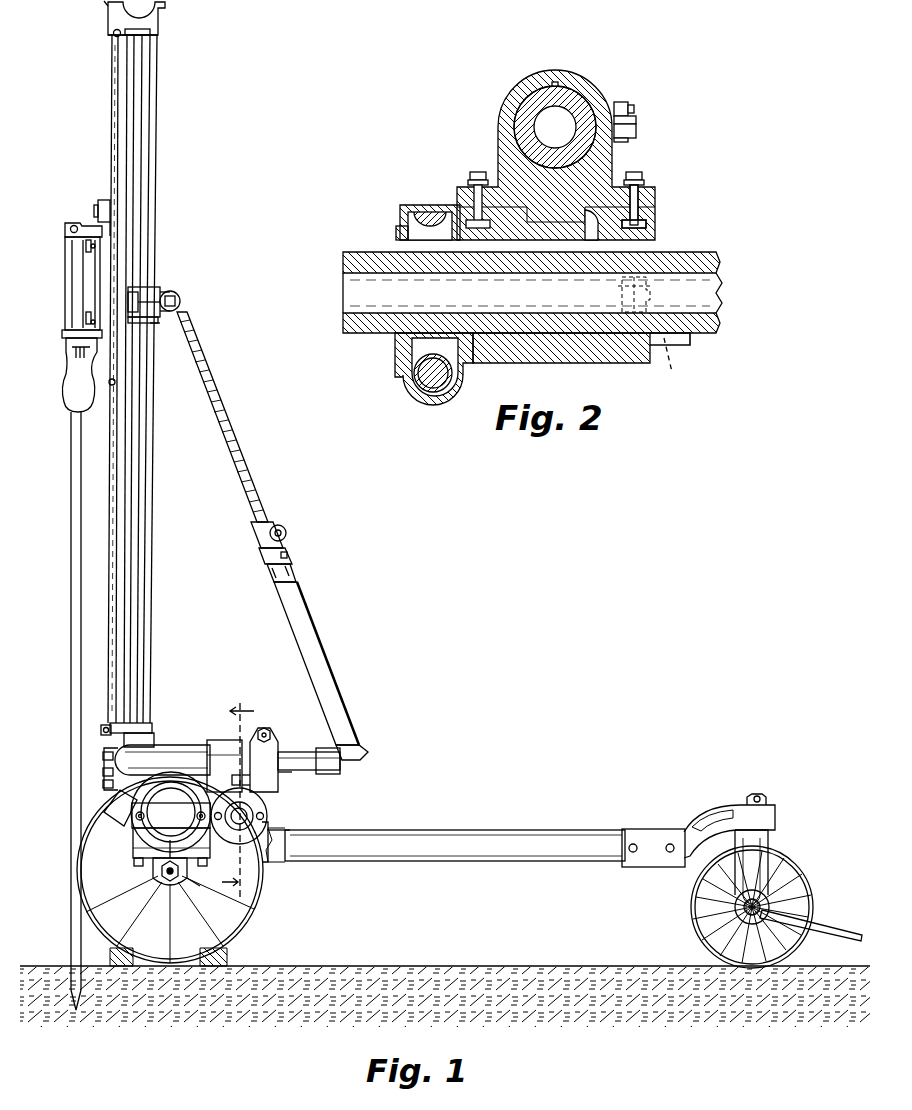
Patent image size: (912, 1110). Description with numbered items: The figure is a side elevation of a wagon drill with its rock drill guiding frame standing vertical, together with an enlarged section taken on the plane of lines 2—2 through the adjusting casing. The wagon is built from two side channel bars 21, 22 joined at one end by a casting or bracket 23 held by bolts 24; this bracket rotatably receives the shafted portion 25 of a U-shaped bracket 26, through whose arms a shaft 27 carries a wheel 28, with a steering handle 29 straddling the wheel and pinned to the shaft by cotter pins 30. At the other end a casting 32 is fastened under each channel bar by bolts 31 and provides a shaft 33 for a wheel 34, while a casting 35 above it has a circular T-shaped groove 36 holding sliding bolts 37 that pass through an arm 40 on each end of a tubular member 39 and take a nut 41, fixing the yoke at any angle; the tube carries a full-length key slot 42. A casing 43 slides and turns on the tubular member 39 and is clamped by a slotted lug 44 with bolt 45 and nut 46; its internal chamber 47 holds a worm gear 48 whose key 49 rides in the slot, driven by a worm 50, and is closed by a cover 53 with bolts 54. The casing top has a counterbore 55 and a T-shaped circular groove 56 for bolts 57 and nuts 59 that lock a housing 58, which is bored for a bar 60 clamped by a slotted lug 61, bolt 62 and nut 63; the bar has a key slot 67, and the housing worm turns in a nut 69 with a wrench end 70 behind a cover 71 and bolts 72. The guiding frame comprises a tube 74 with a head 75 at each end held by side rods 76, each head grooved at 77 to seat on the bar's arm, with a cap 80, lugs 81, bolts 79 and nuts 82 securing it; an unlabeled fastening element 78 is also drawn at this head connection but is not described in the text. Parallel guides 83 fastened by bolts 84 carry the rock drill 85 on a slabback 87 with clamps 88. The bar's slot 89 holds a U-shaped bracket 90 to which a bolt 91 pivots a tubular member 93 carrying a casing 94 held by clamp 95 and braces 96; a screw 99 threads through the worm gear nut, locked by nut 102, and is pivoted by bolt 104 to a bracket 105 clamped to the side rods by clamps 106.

In FIG. 1, the section plane lines 2— 2 is at (245, 799).
In FIG. 1, the side channel bar 21 is at (525, 834).
In FIG. 1, the side channel bar 22 is at (293, 850).
In FIG. 1, the casting or bracket 23 is at (728, 806).
In FIG. 1, the bolts 24 is at (670, 843).
In FIG. 1, the shafted portion 25 is at (762, 792).
In FIG. 1, the U-shaped bracket 26 is at (768, 846).
In FIG. 1, the shaft 27 is at (736, 904).
In FIG. 1, the wheel 28 is at (794, 866).
In FIG. 1, the steering handle 29 is at (832, 928).
In FIG. 1, the cotter pins 30 is at (752, 916).
In FIG. 1, the bolts 31 is at (153, 876).
In FIG. 1, the casting 32 is at (154, 884).
In FIG. 1, the shaft 33 is at (167, 882).
In FIG. 1, the wheel 34 is at (256, 908).
In FIG. 1, the casting 35 is at (134, 864).
In FIG. 1, the circular T-shaped groove 36 is at (136, 845).
In FIG. 1, the bolts 37 is at (196, 816).
In FIG. 1, the tubular member 39 is at (178, 856).
In FIG. 2, the tubular member 39 is at (686, 340).
In FIG. 1, the arm 40 is at (190, 880).
In FIG. 1, the nut 41 is at (148, 828).
In FIG. 2, the key slot 42 is at (680, 256).
In FIG. 1, the casing 43 is at (268, 866).
In FIG. 2, the casing 43 is at (586, 356).
In FIG. 2, the slotted lug 44 is at (652, 288).
In FIG. 2, the bolt 45 is at (622, 284).
In FIG. 2, the nut 46 is at (674, 372).
In FIG. 2, the internal chamber 47 is at (430, 214).
In FIG. 2, the worm gear 48 is at (418, 214).
In FIG. 2, the key 49 is at (398, 246).
In FIG. 2, the worm 50 is at (424, 390).
In FIG. 1, the cover 53 is at (268, 816).
In FIG. 2, the cover 53 is at (396, 348).
In FIG. 1, the bolts 54 is at (282, 832).
In FIG. 2, the counterbore 55 is at (590, 222).
In FIG. 2, the T-shaped circular groove 56 is at (646, 224).
In FIG. 2, the bolts 57 is at (640, 198).
In FIG. 1, the housing 58 is at (222, 742).
In FIG. 2, the housing 58 is at (606, 172).
In FIG. 2, the nuts 59 is at (644, 182).
In FIG. 1, the bar 60 is at (162, 758).
In FIG. 2, the bar 60 is at (580, 100).
In FIG. 2, the slotted lug 61 is at (636, 119).
In FIG. 2, the bolt 62 is at (636, 136).
In FIG. 2, the nut 63 is at (630, 106).
In FIG. 2, the key slot 67 is at (555, 82).
In FIG. 1, the nut 69 is at (264, 728).
In FIG. 1, the free end 70 is at (272, 737).
In FIG. 1, the cover 71 is at (276, 788).
In FIG. 1, the bolts 72 is at (284, 776).
In FIG. 1, the tube 74 is at (147, 522).
In FIG. 1, the head 75 is at (160, 24).
In FIG. 1, the long bolts or side rods 76 is at (140, 176).
In FIG. 1, the semi-circular groove 77 is at (124, 752).
In FIG. 1, the bolt 78 is at (103, 758).
In FIG. 1, the bolts 79 is at (102, 752).
In FIG. 1, the cap 80 is at (130, 778).
In FIG. 1, the apertured lugs 81 is at (103, 772).
In FIG. 1, the nuts 82 is at (106, 786).
In FIG. 1, the parallel guides 83 is at (114, 120).
In FIG. 1, the bolts 84 is at (113, 34).
In FIG. 1, the rock drill 85 is at (66, 290).
In FIG. 1, the support or slabback 87 is at (100, 199).
In FIG. 1, the clamps 88 is at (91, 246).
In FIG. 1, the slot 89 is at (320, 754).
In FIG. 1, the U-shaped bracket 90 is at (338, 774).
In FIG. 1, the bolt 91 is at (368, 750).
In FIG. 1, the tubular member 93 is at (297, 572).
In FIG. 1, the casing 94 is at (287, 533).
In FIG. 1, the clamp 95 is at (292, 555).
In FIG. 1, the brace 96 is at (328, 672).
In FIG. 1, the screw 99 is at (246, 470).
In FIG. 1, the nut 102 is at (282, 526).
In FIG. 1, the bolt 104 is at (181, 302).
In FIG. 1, the bracket 105 is at (158, 294).
In FIG. 1, the clamps 106 is at (150, 324).